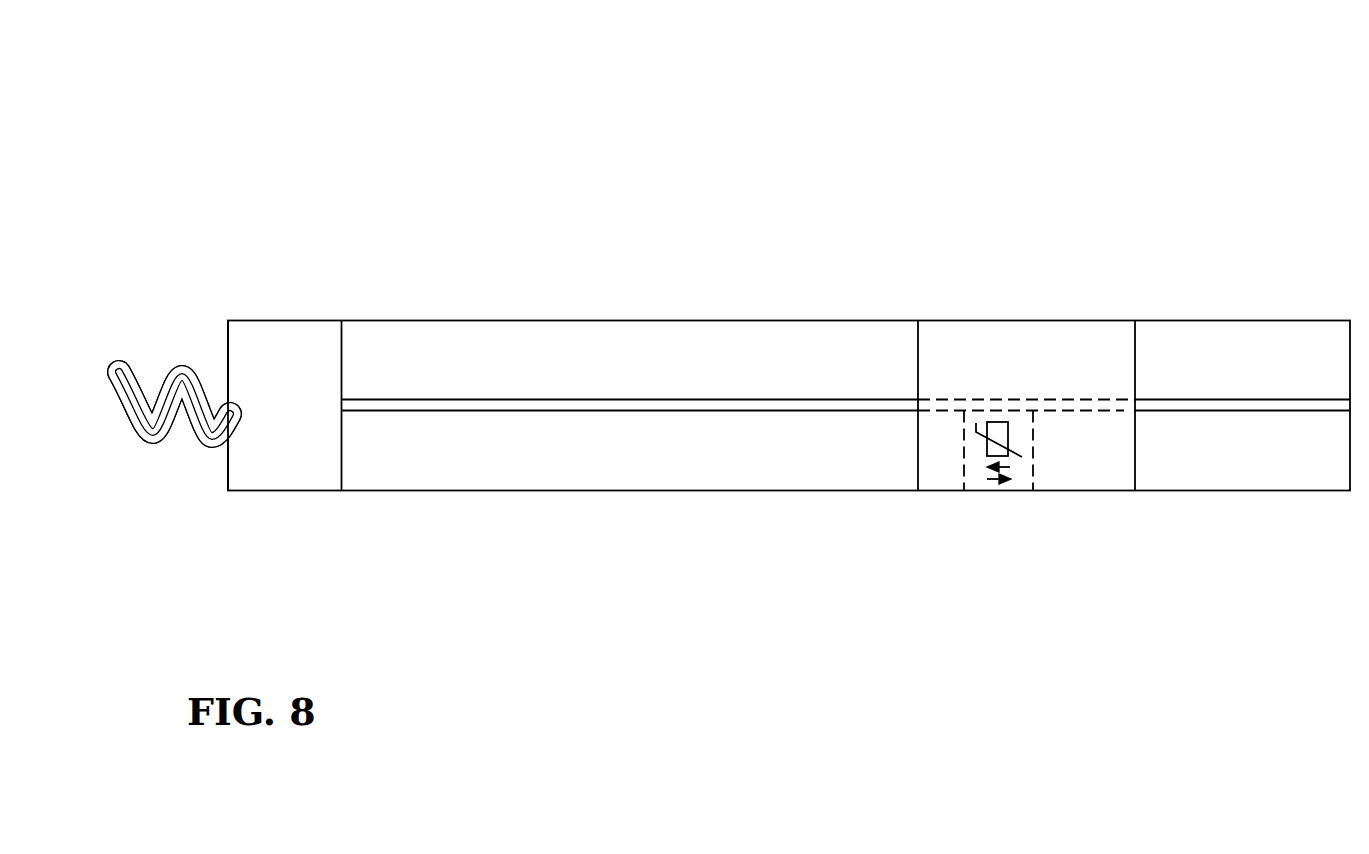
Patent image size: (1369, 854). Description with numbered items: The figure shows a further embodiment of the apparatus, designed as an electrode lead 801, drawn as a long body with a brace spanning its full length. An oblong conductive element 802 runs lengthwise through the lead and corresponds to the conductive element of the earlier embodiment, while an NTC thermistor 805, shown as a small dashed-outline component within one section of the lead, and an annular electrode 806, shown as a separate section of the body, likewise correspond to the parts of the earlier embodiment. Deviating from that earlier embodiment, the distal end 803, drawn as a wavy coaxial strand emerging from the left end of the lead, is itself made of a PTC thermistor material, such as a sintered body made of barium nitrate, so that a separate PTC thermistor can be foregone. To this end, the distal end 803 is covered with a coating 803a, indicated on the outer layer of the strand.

The electrode lead 801 is at (1362, 162).
The oblong conductive element 802 is at (568, 398).
The distal end 803 is at (147, 438).
The coating 803a is at (172, 367).
The NTC thermistor 805 is at (963, 468).
The annular electrode 806 is at (1113, 320).